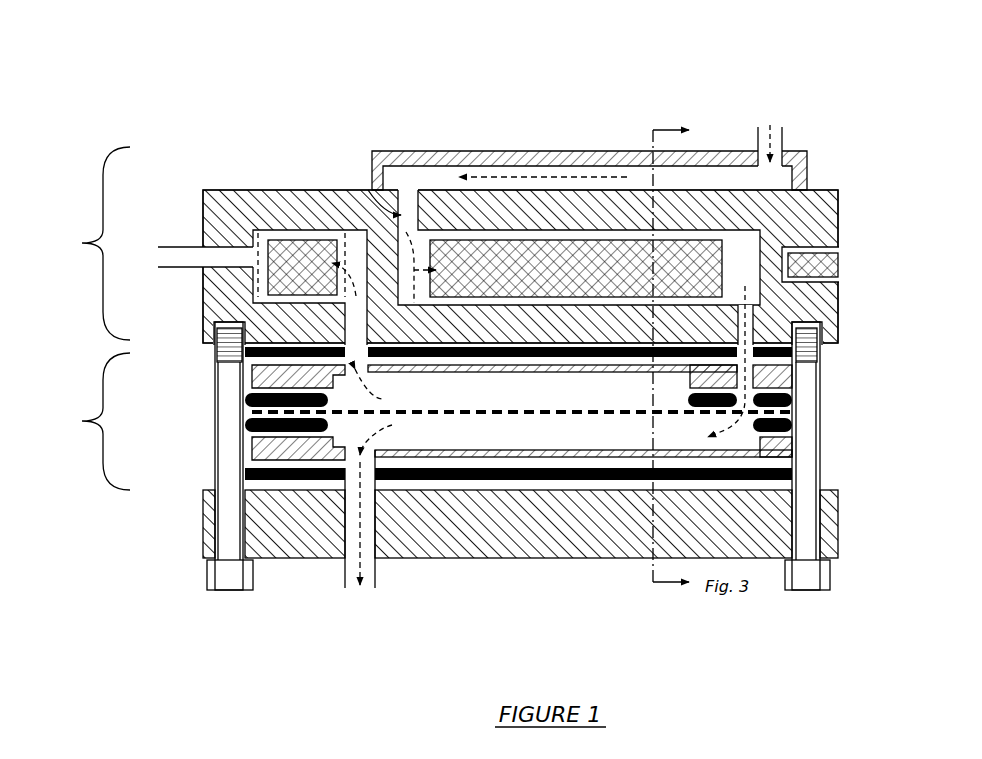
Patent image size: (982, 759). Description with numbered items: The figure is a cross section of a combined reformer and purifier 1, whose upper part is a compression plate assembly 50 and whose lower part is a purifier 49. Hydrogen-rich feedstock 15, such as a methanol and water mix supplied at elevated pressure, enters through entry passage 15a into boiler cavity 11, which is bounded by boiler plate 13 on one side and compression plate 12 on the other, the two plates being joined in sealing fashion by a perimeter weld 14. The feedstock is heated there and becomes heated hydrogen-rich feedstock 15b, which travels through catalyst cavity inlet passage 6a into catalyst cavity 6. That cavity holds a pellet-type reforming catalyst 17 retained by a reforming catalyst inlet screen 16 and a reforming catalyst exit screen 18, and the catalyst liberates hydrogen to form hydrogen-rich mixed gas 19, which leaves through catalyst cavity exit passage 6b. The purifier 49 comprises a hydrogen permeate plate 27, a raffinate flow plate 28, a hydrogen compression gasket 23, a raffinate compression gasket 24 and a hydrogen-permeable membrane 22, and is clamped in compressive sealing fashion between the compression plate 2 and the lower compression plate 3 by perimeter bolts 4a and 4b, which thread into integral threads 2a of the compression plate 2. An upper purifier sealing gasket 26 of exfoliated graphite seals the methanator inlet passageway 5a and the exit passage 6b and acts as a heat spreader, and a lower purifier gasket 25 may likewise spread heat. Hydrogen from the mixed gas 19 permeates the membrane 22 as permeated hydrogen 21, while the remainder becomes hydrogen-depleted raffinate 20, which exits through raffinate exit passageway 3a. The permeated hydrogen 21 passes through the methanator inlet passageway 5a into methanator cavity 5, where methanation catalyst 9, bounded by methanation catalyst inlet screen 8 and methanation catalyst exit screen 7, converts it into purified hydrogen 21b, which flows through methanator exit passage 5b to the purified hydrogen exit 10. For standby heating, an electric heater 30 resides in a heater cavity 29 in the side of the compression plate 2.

The combined reformer and purifier 1 is at (200, 190).
The compression plate 2 is at (405, 331).
The integral threads 2a is at (214, 335).
The lower compression plate 3 is at (523, 538).
The raffinate exit passageway 3a is at (338, 525).
The perimeter bolt 4a is at (214, 418).
The perimeter bolt 4b is at (822, 452).
The methanator cavity 5 is at (279, 228).
The methanator inlet passageway 5a is at (356, 324).
The methanator exit passage 5b is at (226, 242).
The catalyst cavity 6 is at (543, 231).
The catalyst cavity inlet passage 6a is at (367, 188).
The catalyst cavity exit passage 6b is at (760, 333).
The methanation catalyst exit screen 7 is at (256, 241).
The methanation catalyst inlet screen 8 is at (339, 238).
The methanation catalyst 9 is at (293, 276).
The purified hydrogen exit 10 is at (156, 248).
The boiler cavity 11 is at (660, 189).
The compression plate 12 is at (480, 186).
The boiler plate 13 is at (440, 148).
The perimeter weld 14 is at (811, 188).
The hydrogen-rich feedstock 15 is at (759, 121).
The entry passage 15a is at (785, 140).
The heated hydrogen-rich feedstock 15b is at (411, 189).
The reforming catalyst inlet screen 16 is at (423, 246).
The reforming catalyst 17 is at (550, 279).
The reforming catalyst exit screen 18 is at (727, 249).
The hydrogen-rich mixed gas 19 is at (659, 443).
The hydrogen-depleted raffinate 20 is at (402, 443).
The permeated hydrogen 21 is at (392, 398).
The purified hydrogen 21b is at (181, 269).
The hydrogen-permeable membrane 22 is at (402, 489).
The hydrogen compression gasket 23 is at (795, 400).
The raffinate compression gasket 24 is at (243, 435).
The lower purifier gasket 25 is at (443, 426).
The upper purifier sealing gasket 26 is at (495, 359).
The hydrogen permeate plate 27 is at (568, 379).
The raffinate flow plate 28 is at (588, 465).
The heater cavity 29 is at (820, 243).
The electric heater 30 is at (842, 267).
The purifier 49 is at (79, 421).
The compression plate assembly 50 is at (79, 243).